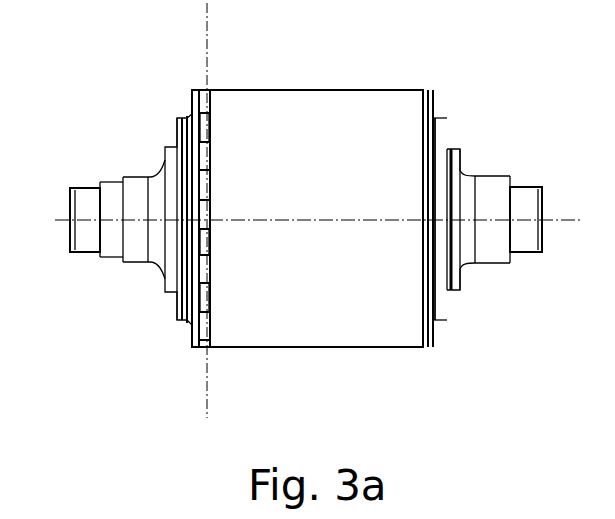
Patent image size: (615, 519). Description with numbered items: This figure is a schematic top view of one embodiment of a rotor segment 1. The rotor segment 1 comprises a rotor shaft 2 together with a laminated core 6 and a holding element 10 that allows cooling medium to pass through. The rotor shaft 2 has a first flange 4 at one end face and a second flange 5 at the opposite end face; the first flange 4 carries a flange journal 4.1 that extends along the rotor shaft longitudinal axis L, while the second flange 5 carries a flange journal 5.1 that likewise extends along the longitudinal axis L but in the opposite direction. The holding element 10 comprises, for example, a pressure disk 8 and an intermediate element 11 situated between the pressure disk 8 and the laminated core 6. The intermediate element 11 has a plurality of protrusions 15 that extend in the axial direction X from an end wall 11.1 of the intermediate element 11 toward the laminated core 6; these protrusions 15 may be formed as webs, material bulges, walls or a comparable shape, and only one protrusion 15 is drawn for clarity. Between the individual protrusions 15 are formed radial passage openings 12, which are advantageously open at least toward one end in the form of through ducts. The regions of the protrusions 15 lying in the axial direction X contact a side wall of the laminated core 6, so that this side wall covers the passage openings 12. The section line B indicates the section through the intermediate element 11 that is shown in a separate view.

The rotor segment 1 is at (493, 78).
The rotor shaft 2 is at (510, 149).
The first flange 4 is at (165, 146).
The flange journal 4.1 is at (86, 202).
The second flange 5 is at (463, 152).
The flange journal 5.1 is at (528, 252).
The laminated core 6 is at (358, 103).
The pressure disk 8 is at (190, 97).
The holding element 10 is at (198, 87).
The intermediate element 11 is at (203, 116).
The end wall 11.1 is at (203, 134).
The radial passage openings 12 is at (210, 243).
The protrusions 15 is at (210, 314).
The rotor shaft longitudinal axis L is at (66, 225).
The axial direction X is at (420, 373).
The section B- B is at (203, 15).